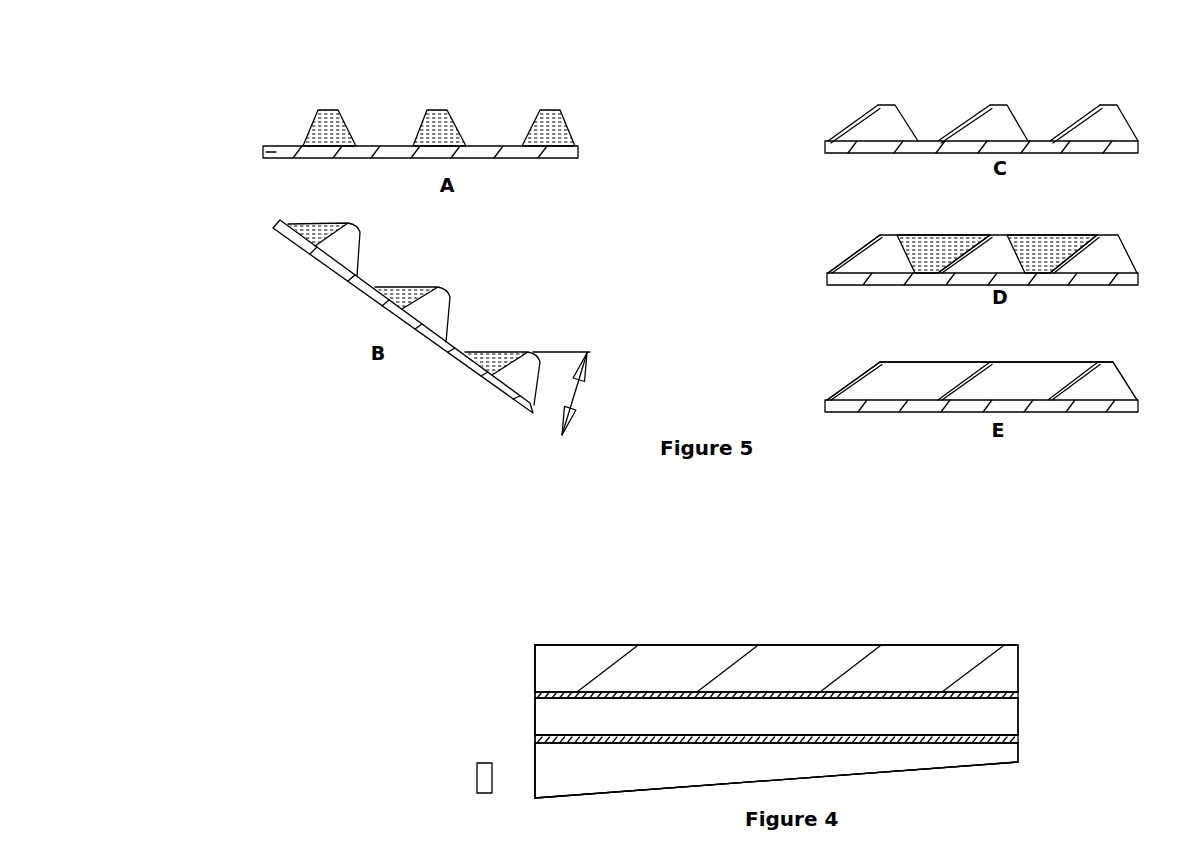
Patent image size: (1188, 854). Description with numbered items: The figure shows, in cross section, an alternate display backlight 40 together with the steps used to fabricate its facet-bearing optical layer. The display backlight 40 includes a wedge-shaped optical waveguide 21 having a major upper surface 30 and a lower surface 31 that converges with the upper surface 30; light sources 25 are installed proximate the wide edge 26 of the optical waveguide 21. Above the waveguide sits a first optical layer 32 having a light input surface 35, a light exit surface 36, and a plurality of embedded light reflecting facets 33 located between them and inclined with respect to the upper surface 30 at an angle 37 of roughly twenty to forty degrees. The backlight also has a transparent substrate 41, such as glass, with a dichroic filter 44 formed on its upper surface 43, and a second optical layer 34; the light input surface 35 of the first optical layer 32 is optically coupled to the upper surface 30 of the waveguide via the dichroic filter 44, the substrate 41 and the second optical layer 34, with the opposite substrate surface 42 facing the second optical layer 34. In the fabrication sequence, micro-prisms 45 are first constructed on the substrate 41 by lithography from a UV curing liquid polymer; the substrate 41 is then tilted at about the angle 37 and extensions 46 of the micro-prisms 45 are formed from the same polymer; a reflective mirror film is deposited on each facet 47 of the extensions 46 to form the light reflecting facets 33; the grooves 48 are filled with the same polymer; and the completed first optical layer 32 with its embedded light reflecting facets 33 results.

In FIG. 4, the optical waveguide 21 is at (632, 765).
In FIG. 4, the light sources 25 is at (482, 778).
In FIG. 4, the wide edge 26 is at (535, 772).
In FIG. 4, the upper surface 30 is at (563, 743).
In FIG. 4, the lower surface 31 is at (865, 775).
In FIG. 5, the first optical layer 32 is at (1103, 382).
In FIG. 4, the first optical layer 32 is at (995, 668).
In FIG. 5, the embedded light reflecting facets 33 is at (855, 122).
In FIG. 4, the embedded light reflecting facets 33 is at (600, 673).
In FIG. 4, the second optical layer 34 is at (1007, 740).
In FIG. 4, the light input surface 35 is at (563, 692).
In FIG. 4, the light exit surface 36 is at (568, 645).
In FIG. 5, the angle 37 is at (571, 393).
In FIG. 4, the display backlight 40 is at (547, 572).
In FIG. 5, the substrate 41 is at (265, 155).
In FIG. 4, the substrate 41 is at (995, 715).
In FIG. 4, the lower surface of intermediate layer 42 is at (563, 735).
In FIG. 4, the upper surface of substrate 43 is at (565, 697).
In FIG. 4, the dichroic filter 44 is at (1007, 695).
In FIG. 5, the micro-prisms 45 is at (327, 125).
In FIG. 5, the extensions 46 is at (310, 231).
In FIG. 5, the facet 47 is at (878, 121).
In FIG. 5, the grooves 48 is at (937, 250).